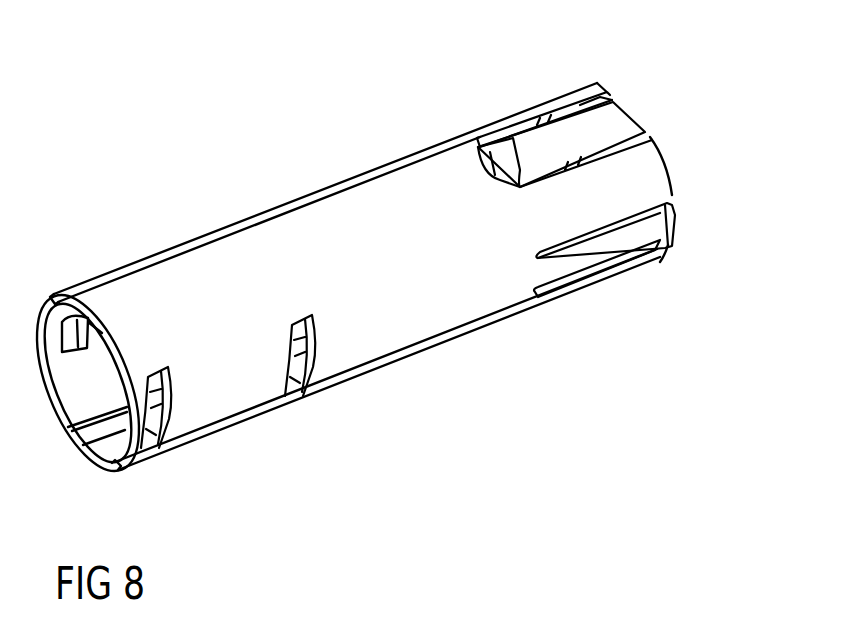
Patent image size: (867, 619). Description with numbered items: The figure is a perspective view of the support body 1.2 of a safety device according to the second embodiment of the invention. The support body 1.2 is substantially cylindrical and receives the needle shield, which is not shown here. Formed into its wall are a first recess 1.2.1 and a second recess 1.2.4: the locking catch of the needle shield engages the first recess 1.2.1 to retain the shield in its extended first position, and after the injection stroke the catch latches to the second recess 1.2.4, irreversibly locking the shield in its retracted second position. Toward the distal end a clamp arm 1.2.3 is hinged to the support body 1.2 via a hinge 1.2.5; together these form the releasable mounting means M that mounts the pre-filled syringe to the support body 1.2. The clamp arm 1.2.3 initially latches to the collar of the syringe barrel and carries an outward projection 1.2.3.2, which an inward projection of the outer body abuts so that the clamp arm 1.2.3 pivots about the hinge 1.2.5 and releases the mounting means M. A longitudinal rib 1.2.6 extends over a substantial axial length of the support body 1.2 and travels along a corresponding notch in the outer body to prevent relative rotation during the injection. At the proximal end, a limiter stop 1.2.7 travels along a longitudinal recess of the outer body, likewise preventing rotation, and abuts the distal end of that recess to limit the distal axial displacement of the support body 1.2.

The support body 1.2 is at (403, 337).
The first recess 1.2.1 is at (155, 440).
The clamp arm 1.2.3 is at (627, 120).
The outward projection 1.2.3.2 is at (508, 150).
The second recess 1.2.4 is at (297, 390).
The hinge 1.2.5 is at (545, 118).
The longitudinal rib 1.2.6 is at (175, 248).
The limiter stop 1.2.7 is at (668, 245).
The mounting means M is at (586, 96).